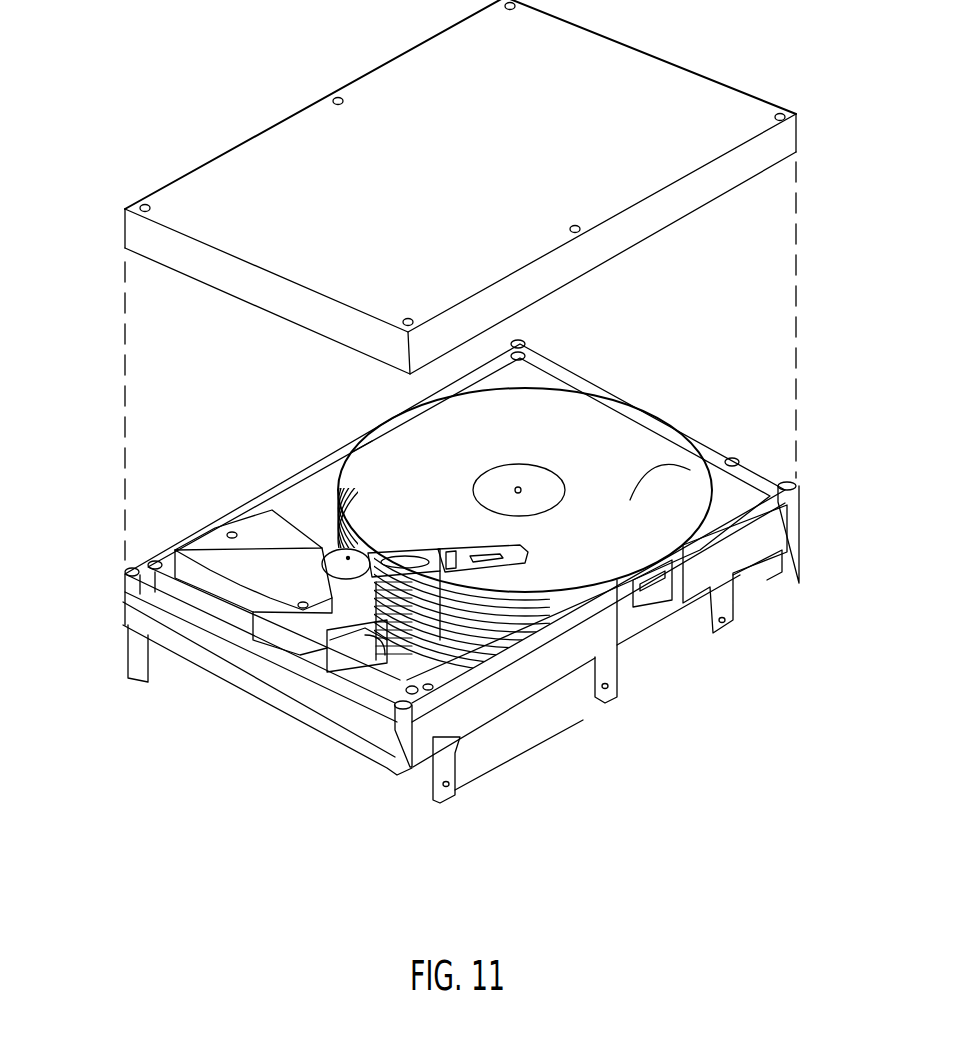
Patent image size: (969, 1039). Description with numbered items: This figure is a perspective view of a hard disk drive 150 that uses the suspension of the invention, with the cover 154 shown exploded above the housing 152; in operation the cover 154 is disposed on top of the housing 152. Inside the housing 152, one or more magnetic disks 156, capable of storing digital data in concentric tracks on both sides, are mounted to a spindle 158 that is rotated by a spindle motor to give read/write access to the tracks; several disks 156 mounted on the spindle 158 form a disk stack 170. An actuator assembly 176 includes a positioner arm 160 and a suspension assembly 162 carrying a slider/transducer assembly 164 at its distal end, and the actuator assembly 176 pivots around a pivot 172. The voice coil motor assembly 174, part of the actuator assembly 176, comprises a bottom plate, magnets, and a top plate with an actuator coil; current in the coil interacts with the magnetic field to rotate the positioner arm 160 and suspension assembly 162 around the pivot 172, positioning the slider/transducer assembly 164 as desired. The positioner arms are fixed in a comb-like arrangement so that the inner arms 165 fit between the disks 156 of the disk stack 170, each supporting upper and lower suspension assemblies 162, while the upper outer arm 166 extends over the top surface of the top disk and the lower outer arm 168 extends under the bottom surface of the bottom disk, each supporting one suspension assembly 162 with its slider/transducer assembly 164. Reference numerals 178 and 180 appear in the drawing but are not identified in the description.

The hard disk drive 150 is at (738, 925).
The housing 152 is at (483, 760).
The cover 154 is at (777, 143).
The magnetic disk 156 is at (605, 415).
The spindle 158 is at (518, 490).
The positioner arm 160 is at (348, 558).
The suspension assembly 162 is at (470, 572).
The slider/transducer assembly 164 is at (527, 560).
The inner arm 165 is at (525, 610).
The upper outer arm 166 is at (365, 452).
The lower outer arm 168 is at (462, 648).
The disk stack 170 is at (520, 615).
The pivot 172 is at (332, 550).
The voice coil motor assembly 174 is at (248, 578).
The actuator assembly 176 is at (355, 605).
The pivot bearing 178 is at (358, 657).
The latch 180 is at (375, 640).